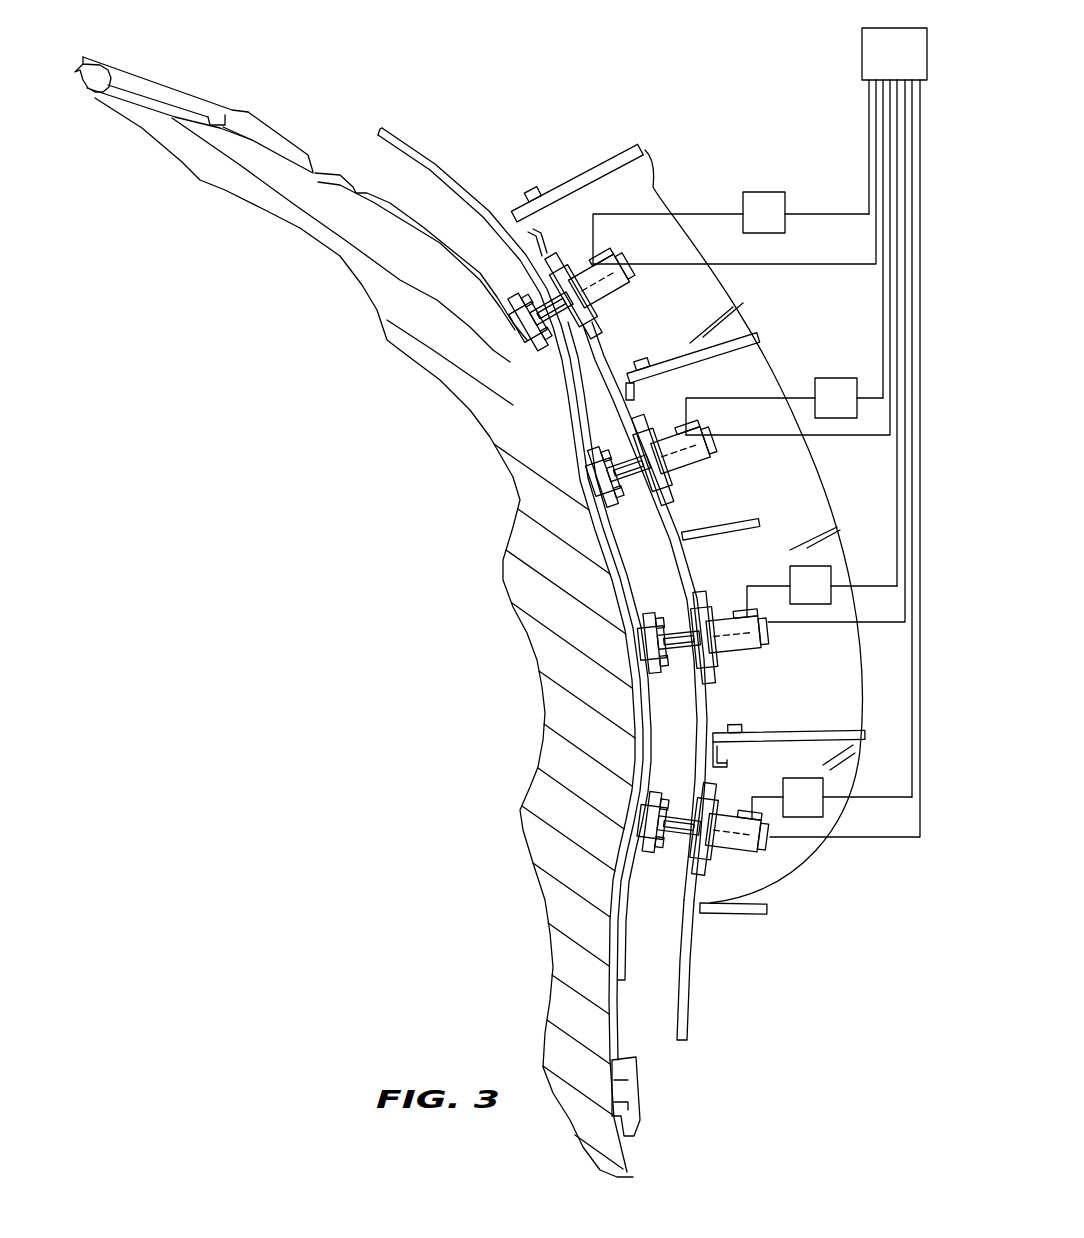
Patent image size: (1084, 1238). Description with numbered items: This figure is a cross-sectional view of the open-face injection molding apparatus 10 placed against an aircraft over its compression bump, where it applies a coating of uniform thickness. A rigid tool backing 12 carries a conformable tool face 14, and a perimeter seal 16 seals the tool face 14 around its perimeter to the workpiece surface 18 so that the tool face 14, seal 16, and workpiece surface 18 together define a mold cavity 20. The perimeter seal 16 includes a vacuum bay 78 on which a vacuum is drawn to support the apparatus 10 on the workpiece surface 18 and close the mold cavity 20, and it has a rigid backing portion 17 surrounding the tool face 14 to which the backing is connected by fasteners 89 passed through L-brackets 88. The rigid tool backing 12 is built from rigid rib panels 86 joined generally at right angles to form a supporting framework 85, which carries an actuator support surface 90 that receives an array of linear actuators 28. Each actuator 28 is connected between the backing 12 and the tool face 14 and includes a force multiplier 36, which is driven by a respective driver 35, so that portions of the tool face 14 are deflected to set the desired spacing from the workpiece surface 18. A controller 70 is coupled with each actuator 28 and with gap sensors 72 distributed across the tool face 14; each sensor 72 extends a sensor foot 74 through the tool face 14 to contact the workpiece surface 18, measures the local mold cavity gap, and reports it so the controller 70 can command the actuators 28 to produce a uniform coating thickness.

The open-face injection molding apparatus 10 is at (501, 589).
The rigid tool backing 12 is at (326, 158).
The conformable tool face 14 is at (431, 150).
The perimeter seal 16 is at (194, 93).
The rigid backing portion 17 is at (130, 78).
The workpiece surface 18 is at (248, 140).
The mold cavity 20 is at (356, 186).
The linear actuator 28 is at (593, 611).
The force multiplier 36 is at (618, 437).
The driver 35 is at (752, 505).
The controller 70 is at (668, 28).
The gap sensor 72 is at (630, 266).
The sensor foot 74 is at (514, 338).
The vacuum bay 78 is at (212, 117).
The supporting framework 85 is at (866, 740).
The rigid rib panel 86 is at (650, 156).
The L-bracket 88 is at (543, 228).
The fastener 89 is at (540, 195).
The actuator support surface 90 is at (690, 970).